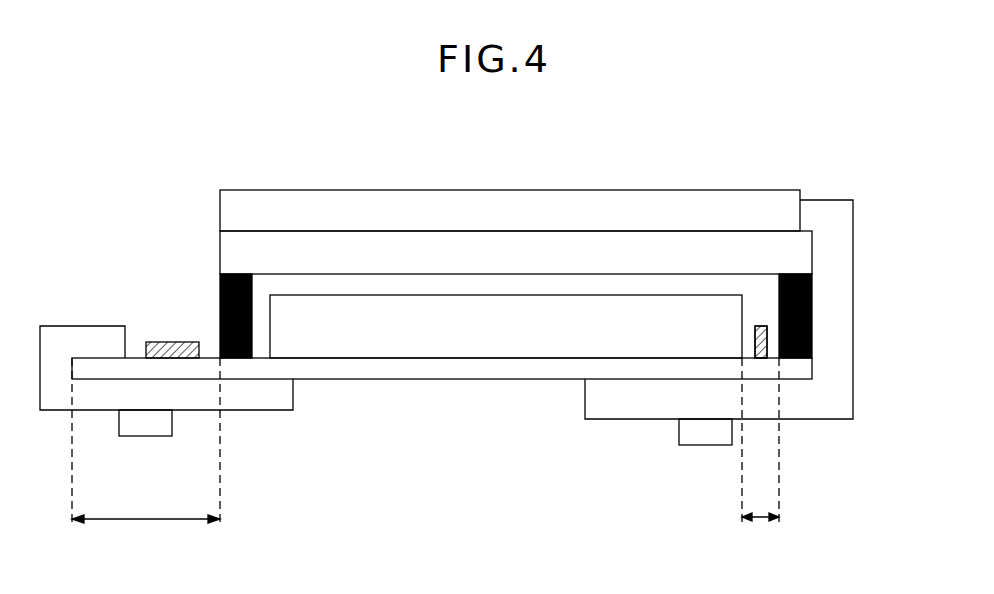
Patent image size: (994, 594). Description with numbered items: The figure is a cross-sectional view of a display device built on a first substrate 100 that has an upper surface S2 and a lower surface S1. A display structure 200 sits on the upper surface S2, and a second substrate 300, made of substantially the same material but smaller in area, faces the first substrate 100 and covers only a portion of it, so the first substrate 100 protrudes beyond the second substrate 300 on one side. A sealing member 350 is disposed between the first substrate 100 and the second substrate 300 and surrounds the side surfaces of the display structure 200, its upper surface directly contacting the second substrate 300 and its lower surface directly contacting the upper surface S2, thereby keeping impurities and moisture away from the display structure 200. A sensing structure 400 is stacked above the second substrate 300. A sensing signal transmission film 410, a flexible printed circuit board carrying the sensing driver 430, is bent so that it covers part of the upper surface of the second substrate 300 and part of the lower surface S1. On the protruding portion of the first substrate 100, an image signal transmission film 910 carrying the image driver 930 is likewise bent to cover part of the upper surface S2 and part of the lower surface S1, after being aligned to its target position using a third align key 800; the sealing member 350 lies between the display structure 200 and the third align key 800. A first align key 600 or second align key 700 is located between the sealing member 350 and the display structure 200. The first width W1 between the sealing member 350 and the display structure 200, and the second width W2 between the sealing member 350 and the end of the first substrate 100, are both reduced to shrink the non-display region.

The first substrate 100 is at (525, 368).
The display structure 200 is at (463, 343).
The second substrate 300 is at (232, 253).
The sealing member 350 is at (218, 290).
The sensing structure 400 is at (519, 190).
The sensing signal transmission film 410 is at (625, 410).
The sensing driver 430 is at (703, 436).
The first align key 600 is at (767, 345).
The second align key 700 is at (761, 342).
The third align key 800 is at (173, 341).
The image signal transmission film 910 is at (48, 411).
The image driver 930 is at (145, 437).
The lower surface of the first substrate S1 is at (339, 380).
The upper surface of the first substrate S2 is at (404, 359).
The first width W1 is at (760, 452).
The second width W2 is at (146, 454).